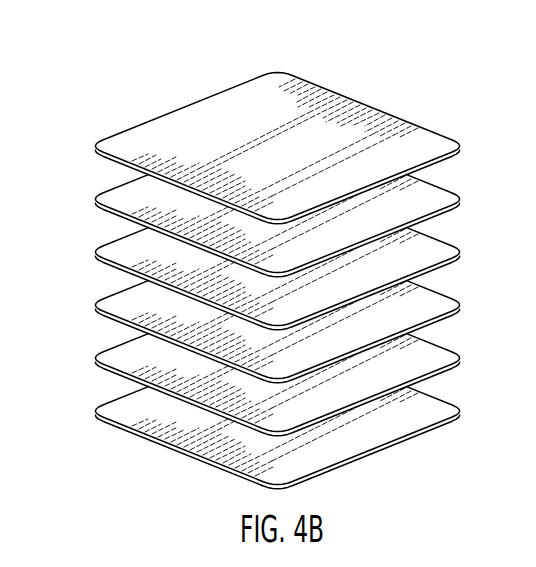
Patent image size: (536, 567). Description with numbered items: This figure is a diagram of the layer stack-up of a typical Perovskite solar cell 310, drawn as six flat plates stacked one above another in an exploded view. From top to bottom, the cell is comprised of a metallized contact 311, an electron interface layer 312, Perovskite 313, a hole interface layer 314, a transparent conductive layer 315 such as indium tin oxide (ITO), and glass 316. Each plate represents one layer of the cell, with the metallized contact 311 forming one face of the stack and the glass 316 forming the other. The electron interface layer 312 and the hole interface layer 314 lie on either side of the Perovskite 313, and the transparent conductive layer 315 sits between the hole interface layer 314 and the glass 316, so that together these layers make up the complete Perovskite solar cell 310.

The Perovskite solar cell 310 is at (275, 258).
The metallized contact 311 is at (452, 136).
The electron interface layer 312 is at (94, 204).
The Perovskite 313 is at (455, 258).
The hole interface layer 314 is at (94, 309).
The transparent conductive layer 315 is at (455, 366).
The glass 316 is at (94, 412).